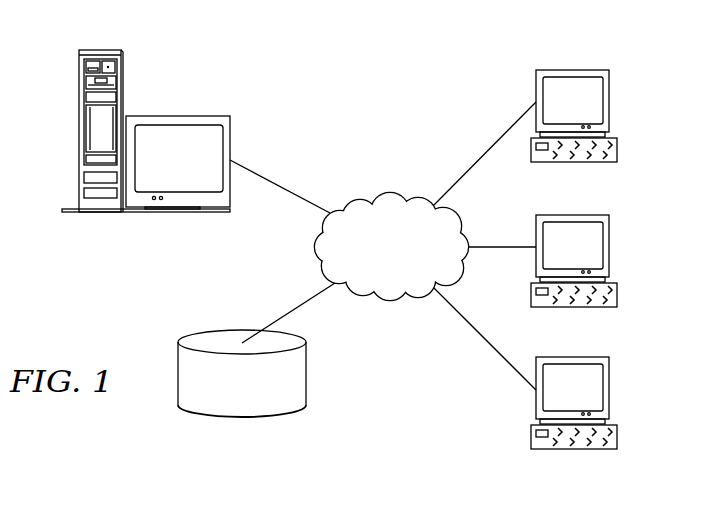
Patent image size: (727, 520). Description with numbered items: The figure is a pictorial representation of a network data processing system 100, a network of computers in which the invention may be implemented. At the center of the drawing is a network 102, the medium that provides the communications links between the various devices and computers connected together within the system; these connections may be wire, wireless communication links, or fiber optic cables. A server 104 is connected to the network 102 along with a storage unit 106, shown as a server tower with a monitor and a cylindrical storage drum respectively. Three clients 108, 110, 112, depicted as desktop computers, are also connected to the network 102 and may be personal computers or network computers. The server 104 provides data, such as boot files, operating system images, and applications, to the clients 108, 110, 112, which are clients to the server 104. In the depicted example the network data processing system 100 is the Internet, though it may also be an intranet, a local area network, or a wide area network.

The network data processing system 100 is at (447, 82).
The network 102 is at (363, 195).
The server 104 is at (79, 132).
The storage unit 106 is at (223, 418).
The client 108 is at (609, 102).
The client 110 is at (609, 247).
The client 112 is at (609, 389).